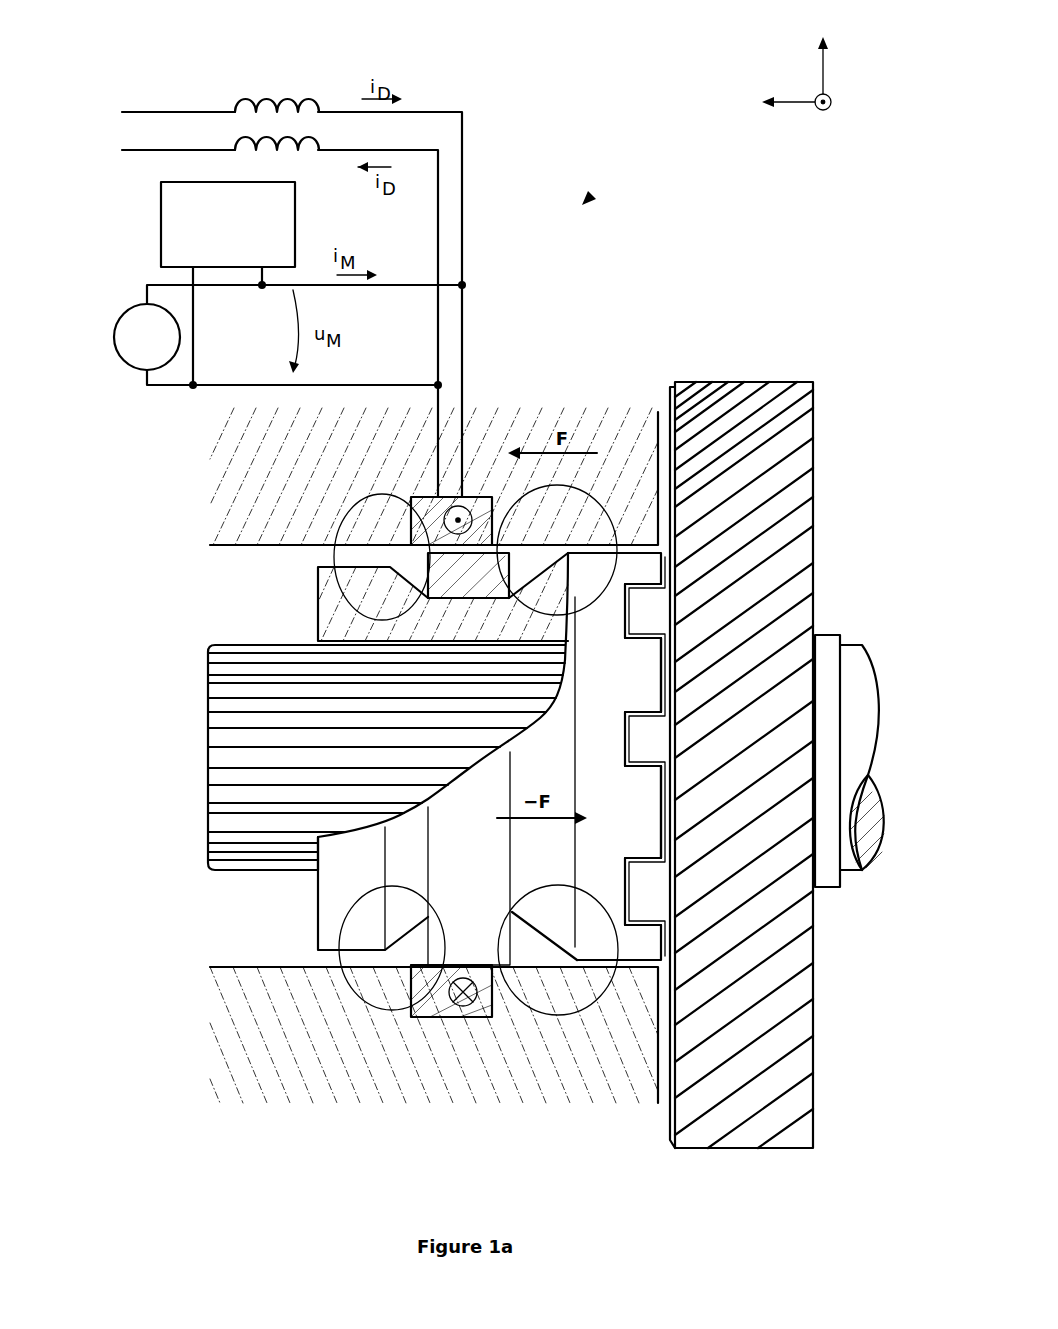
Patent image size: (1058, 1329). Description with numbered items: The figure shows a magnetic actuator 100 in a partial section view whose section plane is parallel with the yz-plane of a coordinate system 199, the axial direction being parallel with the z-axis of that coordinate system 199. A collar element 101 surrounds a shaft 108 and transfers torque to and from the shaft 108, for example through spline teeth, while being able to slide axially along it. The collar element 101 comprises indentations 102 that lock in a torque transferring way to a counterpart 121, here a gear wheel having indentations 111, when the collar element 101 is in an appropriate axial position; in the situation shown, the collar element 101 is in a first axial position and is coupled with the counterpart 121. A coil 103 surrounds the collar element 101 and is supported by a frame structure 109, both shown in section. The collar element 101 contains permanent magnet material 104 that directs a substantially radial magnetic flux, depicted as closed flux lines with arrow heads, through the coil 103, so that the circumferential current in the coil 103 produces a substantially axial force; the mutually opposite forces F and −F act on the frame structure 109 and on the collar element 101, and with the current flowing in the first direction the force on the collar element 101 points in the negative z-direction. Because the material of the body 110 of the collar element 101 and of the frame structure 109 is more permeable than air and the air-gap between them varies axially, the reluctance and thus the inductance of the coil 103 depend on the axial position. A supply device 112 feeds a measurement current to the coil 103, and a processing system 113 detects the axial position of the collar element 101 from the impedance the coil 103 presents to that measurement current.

The magnetic actuator 100 is at (584, 202).
The collar element 101 is at (318, 610).
The indentations of the collar element 102 is at (613, 684).
The coil 103 is at (477, 494).
The permanent magnet material 104 is at (446, 586).
The shaft 108 is at (207, 760).
The frame structure 109 is at (248, 457).
The body of the collar element 110 is at (443, 630).
The indentations of the counterpart 111 is at (631, 622).
The supply device 112 is at (112, 337).
The processing system 113 is at (211, 233).
The counterpart 121 is at (817, 408).
The coordinate system 199 is at (771, 82).